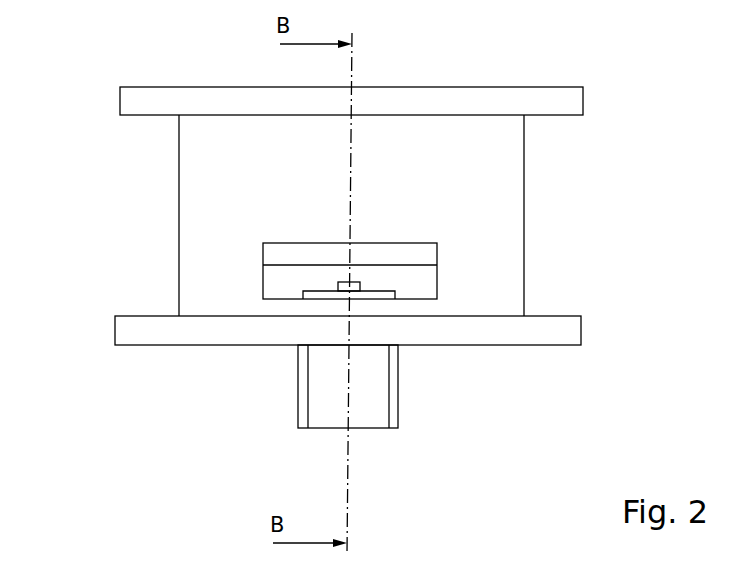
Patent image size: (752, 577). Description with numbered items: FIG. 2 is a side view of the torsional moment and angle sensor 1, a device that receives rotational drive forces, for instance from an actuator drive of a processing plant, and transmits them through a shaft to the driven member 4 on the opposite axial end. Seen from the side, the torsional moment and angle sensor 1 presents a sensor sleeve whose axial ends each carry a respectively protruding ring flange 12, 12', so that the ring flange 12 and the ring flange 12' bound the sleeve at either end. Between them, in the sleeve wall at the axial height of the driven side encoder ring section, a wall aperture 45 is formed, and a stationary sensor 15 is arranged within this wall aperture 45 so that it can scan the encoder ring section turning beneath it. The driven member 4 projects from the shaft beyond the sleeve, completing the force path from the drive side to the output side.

The torsional moment and angle sensor 1 is at (646, 85).
The ring flange 12' is at (310, 72).
The ring flange 12 is at (385, 319).
The wall aperture 45 is at (276, 279).
The stationary sensor 15 is at (357, 284).
The driven member 4 is at (392, 420).